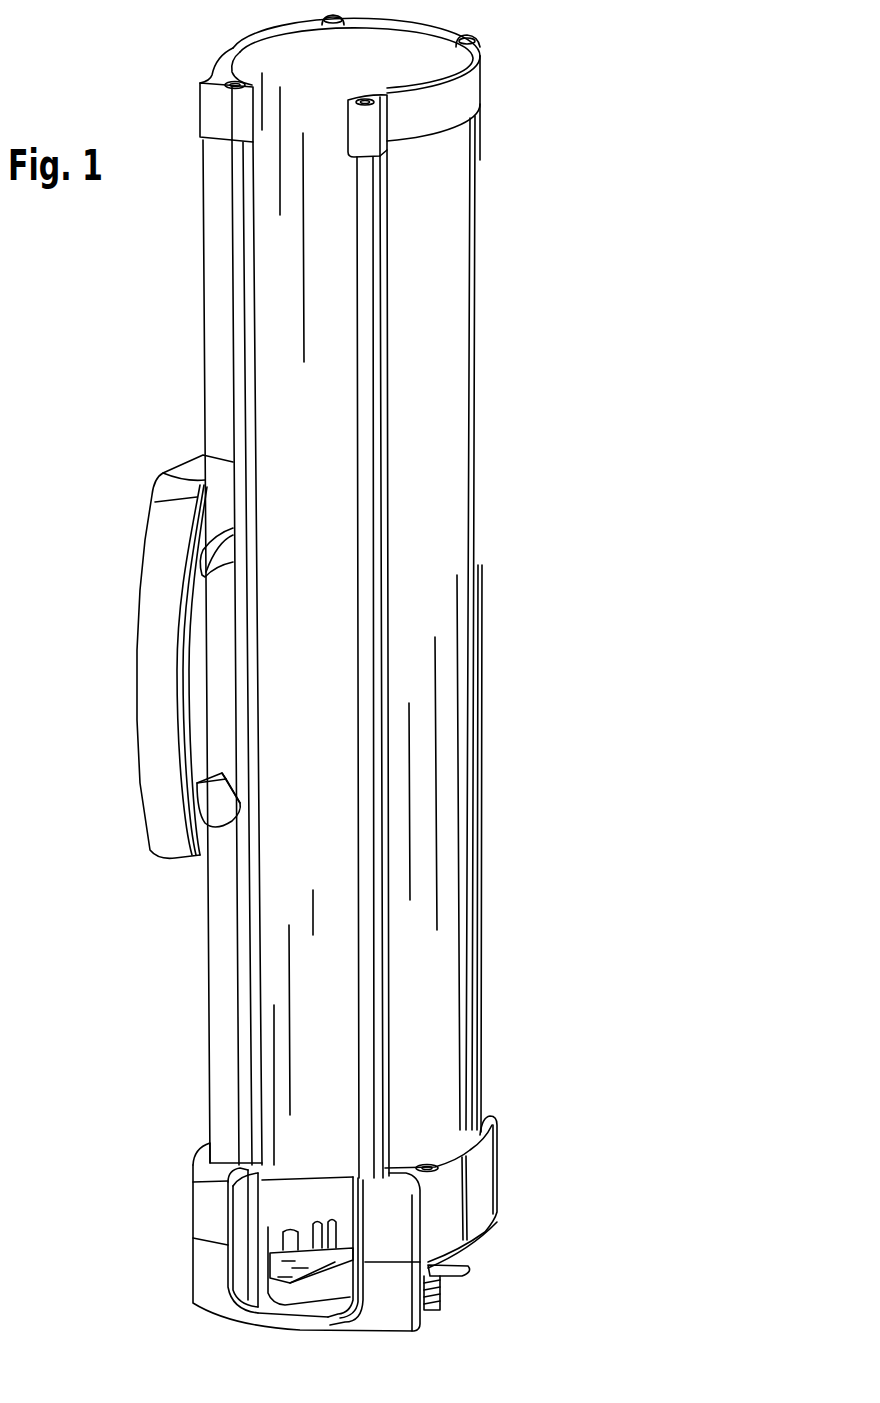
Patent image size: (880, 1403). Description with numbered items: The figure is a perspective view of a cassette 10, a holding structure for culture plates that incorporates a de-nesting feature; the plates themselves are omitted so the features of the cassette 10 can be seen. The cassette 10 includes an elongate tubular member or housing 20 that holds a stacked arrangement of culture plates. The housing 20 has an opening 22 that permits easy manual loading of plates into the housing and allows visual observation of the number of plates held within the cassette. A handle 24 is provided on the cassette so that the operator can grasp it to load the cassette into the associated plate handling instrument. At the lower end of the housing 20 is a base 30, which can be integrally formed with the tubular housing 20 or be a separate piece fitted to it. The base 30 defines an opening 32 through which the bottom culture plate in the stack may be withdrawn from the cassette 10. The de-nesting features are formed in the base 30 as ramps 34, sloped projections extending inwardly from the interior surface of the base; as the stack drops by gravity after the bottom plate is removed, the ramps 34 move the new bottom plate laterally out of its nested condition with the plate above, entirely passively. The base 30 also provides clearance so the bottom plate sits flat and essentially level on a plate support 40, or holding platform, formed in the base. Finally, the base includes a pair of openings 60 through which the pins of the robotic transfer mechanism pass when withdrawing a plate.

The cassette 10 is at (374, 596).
The tubular housing 20 is at (452, 757).
The opening 22 is at (318, 612).
The handle 24 is at (150, 725).
The base 30 is at (480, 1164).
The opening 32 is at (470, 1285).
The ramps 34 is at (318, 1222).
The plate support 40 is at (282, 1274).
The openings 60 is at (270, 1232).